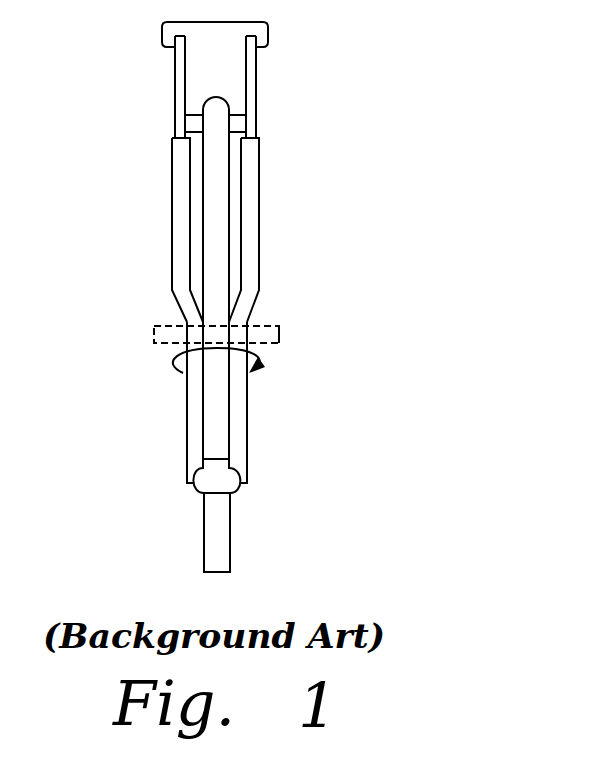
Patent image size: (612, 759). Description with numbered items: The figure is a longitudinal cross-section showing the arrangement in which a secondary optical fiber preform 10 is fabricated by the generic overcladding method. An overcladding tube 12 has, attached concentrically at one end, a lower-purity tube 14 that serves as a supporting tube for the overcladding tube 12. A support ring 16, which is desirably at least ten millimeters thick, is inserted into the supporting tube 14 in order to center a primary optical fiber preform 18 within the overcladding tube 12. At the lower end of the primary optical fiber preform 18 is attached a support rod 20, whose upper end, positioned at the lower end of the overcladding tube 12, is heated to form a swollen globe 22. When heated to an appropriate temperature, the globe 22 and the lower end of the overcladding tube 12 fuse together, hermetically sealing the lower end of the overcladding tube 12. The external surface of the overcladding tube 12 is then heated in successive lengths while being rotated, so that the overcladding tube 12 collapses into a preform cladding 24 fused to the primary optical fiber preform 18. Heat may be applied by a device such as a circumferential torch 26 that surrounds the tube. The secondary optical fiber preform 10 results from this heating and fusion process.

The secondary optical fiber preform 10 is at (152, 428).
The overcladding tube 12 is at (180, 173).
The lower-purity tube 14 is at (180, 115).
The support ring 16 is at (238, 123).
The primary optical fiber preform 18 is at (210, 233).
The support rod 20 is at (227, 520).
The swollen globe 22 is at (200, 486).
The preform cladding 24 is at (248, 397).
The circumferential torch 26 is at (280, 333).